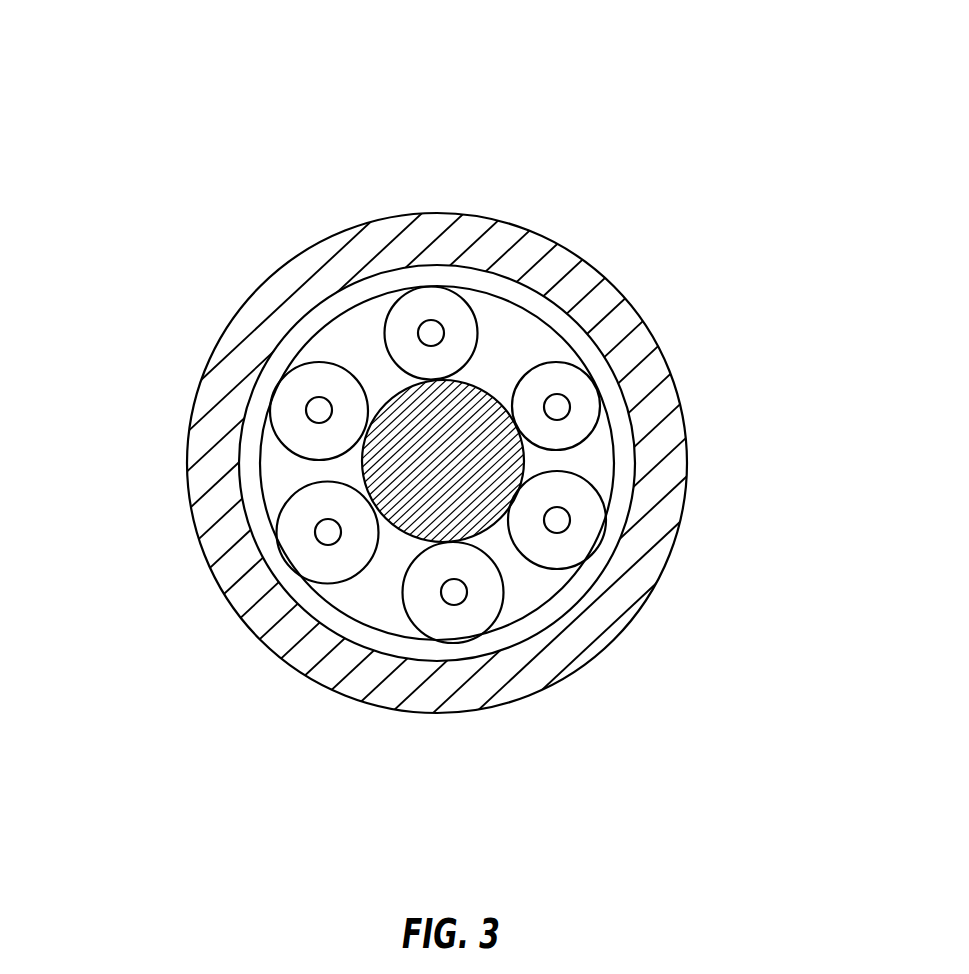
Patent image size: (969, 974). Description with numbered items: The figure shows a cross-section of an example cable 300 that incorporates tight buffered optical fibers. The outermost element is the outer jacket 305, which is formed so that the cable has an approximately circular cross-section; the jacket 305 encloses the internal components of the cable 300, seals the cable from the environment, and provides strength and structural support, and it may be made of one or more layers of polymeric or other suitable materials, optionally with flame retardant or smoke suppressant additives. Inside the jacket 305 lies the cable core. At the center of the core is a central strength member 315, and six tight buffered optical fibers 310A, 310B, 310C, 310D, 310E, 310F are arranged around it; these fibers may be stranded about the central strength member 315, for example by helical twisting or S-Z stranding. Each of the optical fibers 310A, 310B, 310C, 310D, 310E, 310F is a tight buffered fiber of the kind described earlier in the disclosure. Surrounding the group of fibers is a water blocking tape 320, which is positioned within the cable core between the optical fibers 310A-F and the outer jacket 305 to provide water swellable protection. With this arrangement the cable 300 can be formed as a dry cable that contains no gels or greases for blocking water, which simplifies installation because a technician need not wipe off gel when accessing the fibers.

The cable 300 is at (98, 78).
The outer jacket 305 is at (618, 280).
The water blocking tape 320 is at (510, 299).
The central strength member 315 is at (356, 472).
The optical fiber 310A is at (560, 357).
The optical fiber 310B is at (606, 503).
The optical fiber 310C is at (500, 625).
The optical fiber 310D is at (335, 588).
The optical fiber 310E is at (275, 434).
The optical fiber 310F is at (383, 321).